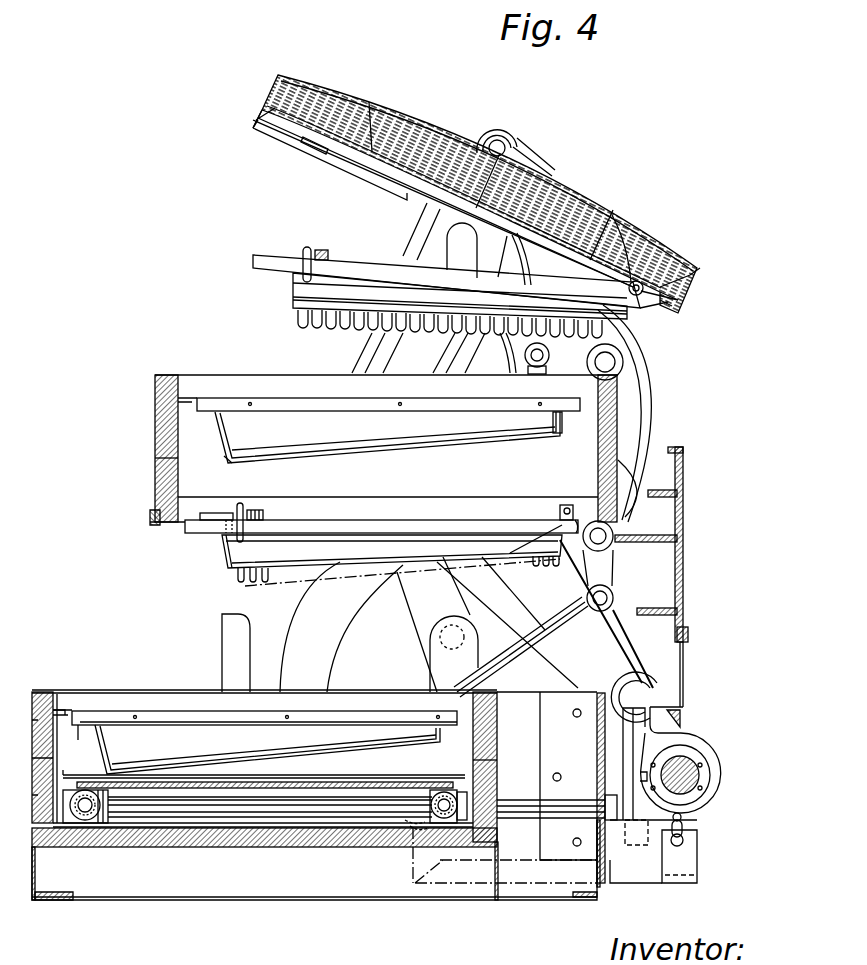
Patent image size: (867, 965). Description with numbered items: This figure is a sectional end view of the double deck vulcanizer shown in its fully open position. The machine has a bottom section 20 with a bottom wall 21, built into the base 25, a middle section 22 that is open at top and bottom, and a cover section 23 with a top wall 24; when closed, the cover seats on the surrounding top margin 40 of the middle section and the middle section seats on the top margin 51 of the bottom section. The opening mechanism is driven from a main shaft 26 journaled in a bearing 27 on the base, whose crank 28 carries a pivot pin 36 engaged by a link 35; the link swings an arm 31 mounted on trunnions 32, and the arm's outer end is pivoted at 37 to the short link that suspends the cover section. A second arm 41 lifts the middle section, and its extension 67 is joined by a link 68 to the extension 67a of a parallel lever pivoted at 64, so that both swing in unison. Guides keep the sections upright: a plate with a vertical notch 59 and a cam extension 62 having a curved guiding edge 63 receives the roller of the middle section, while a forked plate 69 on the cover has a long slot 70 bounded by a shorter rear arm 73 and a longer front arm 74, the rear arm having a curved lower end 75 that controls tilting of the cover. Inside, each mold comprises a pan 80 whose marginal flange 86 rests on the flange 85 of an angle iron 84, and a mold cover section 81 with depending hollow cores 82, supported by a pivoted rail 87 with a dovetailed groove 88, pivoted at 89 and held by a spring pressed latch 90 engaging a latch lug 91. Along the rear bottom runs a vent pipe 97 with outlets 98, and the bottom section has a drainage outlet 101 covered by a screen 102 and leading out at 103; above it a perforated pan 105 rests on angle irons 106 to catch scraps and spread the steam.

The bottom section 20 is at (324, 796).
The bottom wall 21 is at (186, 848).
The middle section 22 is at (152, 443).
The cover section 23 is at (431, 193).
The top wall 24 is at (410, 118).
The base 25 is at (286, 900).
The main shaft 26 is at (700, 775).
The bearing 27 is at (712, 755).
The crank 28 is at (675, 716).
The arm 31 is at (648, 376).
The trunnion 32 is at (655, 466).
The link 35 is at (547, 582).
The pivot pin 36 is at (645, 700).
The pivot 37 is at (507, 140).
The top margin 40 is at (354, 422).
The arm 41 is at (418, 600).
The top margin 51 is at (42, 690).
The vertical notch 59 is at (228, 636).
The cam extension 62 is at (323, 660).
The curved guiding edge 63 is at (296, 598).
The pivot 64 is at (610, 543).
The extension 67 is at (472, 662).
The extension 67a is at (614, 597).
The link 68 is at (530, 655).
The forked plate 69 is at (420, 207).
The slot 70 is at (460, 250).
The rear arm 73 is at (500, 268).
The front arm 74 is at (412, 258).
The curved lower end 75 is at (430, 357).
The pan 80 is at (228, 456).
The cover section 81 is at (291, 293).
The hollow core 82 is at (297, 321).
The angle iron 84 is at (291, 397).
The flange 85 is at (565, 434).
The marginal flange 86 is at (378, 410).
The rail 87 is at (430, 535).
The dovetailed groove 88 is at (272, 255).
The pivot 89 is at (688, 272).
The spring pressed latch 90 is at (312, 250).
The latch lug 91 is at (308, 150).
The vent pipe 97 is at (447, 791).
The outlet 98 is at (515, 805).
The drainage outlet 101 is at (403, 838).
The screen 102 is at (417, 813).
The drainage lead 103 is at (472, 880).
The perforated pan 105 is at (280, 789).
The angle iron 106 is at (508, 767).